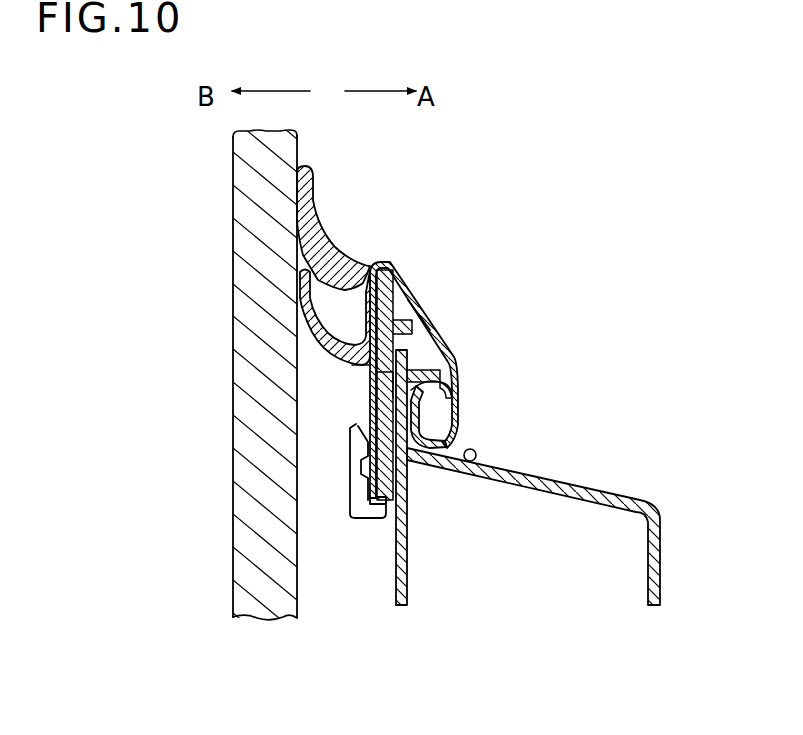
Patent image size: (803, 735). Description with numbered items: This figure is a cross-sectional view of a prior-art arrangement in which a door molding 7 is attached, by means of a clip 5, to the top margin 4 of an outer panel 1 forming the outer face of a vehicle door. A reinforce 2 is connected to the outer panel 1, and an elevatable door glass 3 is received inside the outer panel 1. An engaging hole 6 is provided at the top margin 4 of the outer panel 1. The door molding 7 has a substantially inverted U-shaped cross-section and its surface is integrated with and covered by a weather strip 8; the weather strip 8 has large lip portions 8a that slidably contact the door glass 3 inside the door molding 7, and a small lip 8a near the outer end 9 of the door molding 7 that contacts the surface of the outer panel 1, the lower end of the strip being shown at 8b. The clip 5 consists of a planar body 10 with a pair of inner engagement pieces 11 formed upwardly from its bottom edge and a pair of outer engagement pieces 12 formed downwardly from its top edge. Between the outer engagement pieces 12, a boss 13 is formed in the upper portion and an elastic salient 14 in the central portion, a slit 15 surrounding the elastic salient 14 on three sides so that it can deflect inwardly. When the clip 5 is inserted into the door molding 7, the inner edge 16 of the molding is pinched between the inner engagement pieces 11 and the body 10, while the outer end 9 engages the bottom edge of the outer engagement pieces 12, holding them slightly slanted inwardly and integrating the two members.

The outer panel 1 is at (606, 488).
The reinforce 2 is at (408, 553).
The door glass 3 is at (233, 412).
The top margin 4 is at (412, 346).
The clip 5 is at (352, 378).
The engaging hole 6 is at (450, 406).
The door molding 7 is at (335, 307).
The weather strip 8 is at (393, 268).
The lip portion 8a is at (300, 241).
The end portion 8b is at (477, 455).
The outer end 9 is at (462, 412).
The planar body 10 is at (424, 336).
The inner engagement pieces 11 is at (352, 486).
The outer engagement pieces 12 is at (446, 398).
The boss 13 is at (422, 311).
The elastic salient 14 is at (438, 385).
The slit 15 is at (370, 383).
The inner edge 16 is at (374, 505).